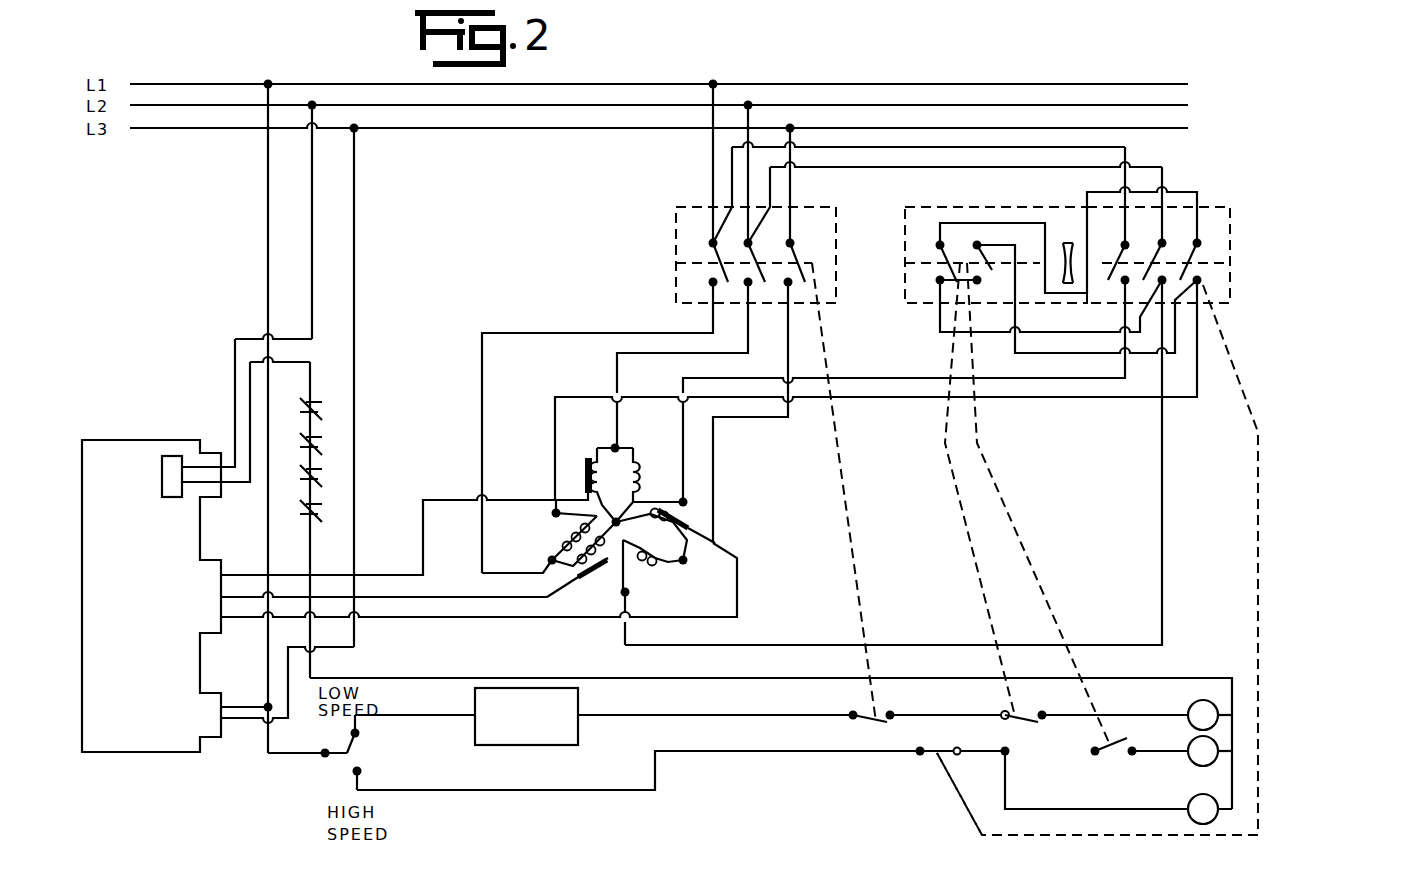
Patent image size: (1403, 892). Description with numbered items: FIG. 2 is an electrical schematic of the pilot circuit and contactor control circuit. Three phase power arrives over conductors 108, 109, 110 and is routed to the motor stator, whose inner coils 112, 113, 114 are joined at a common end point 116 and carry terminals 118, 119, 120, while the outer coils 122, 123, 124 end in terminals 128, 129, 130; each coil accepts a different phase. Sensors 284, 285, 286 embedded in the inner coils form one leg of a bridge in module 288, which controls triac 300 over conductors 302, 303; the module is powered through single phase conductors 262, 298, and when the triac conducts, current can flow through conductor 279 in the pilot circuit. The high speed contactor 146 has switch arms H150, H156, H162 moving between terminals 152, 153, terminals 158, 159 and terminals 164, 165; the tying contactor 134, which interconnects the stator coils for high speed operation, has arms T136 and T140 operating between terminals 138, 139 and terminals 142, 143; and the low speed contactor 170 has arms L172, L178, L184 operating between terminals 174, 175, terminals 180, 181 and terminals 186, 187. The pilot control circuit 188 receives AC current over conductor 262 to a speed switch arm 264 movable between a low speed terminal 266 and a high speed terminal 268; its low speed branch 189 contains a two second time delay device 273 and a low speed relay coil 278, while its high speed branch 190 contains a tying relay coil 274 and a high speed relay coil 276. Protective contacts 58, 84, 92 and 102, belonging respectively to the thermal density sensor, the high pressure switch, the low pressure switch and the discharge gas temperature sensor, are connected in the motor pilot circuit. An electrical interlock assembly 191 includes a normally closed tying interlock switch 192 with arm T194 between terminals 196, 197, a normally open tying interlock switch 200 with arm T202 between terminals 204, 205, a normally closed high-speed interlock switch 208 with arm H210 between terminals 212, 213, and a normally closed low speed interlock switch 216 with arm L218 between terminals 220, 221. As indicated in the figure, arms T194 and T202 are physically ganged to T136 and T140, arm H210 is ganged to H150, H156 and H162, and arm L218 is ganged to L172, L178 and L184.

The power conductor 108 is at (326, 84).
The power conductor 109 is at (383, 105).
The power conductor 110 is at (438, 128).
The conductor 262 is at (268, 266).
The conductor 279 is at (312, 226).
The single phase power conductor 298 is at (354, 208).
The conductor 302 is at (290, 339).
The conductor 303 is at (292, 362).
The triac 300 is at (165, 497).
The module 288 is at (162, 420).
The switch contacts 102 is at (302, 412).
The switch contacts 92 is at (302, 447).
The switch contacts 84 is at (302, 479).
The switch contacts 58 is at (302, 514).
The speed switch arm 264 is at (345, 755).
The low speed terminal 266 is at (362, 734).
The high speed terminal 268 is at (352, 773).
The low speed branch 189 is at (428, 690).
The time delay device 273 is at (512, 745).
The high speed branch 190 is at (505, 798).
The pilot control circuit 188 is at (614, 800).
The high speed contactor 146 is at (666, 262).
The terminal 152 is at (709, 238).
The switch arm H150 is at (722, 270).
The terminal 153 is at (708, 285).
The terminal 158 is at (738, 237).
The terminal 159 is at (748, 287).
The switch arm H156 is at (768, 285).
The terminal 164 is at (795, 240).
The switch arm H162 is at (795, 247).
The terminal 165 is at (790, 288).
The tying contactor 134 is at (928, 314).
The switch arm T136 is at (930, 272).
The terminal 138 is at (936, 243).
The terminal 142 is at (975, 243).
The switch arm T140 is at (993, 270).
The terminal 139 is at (935, 283).
The terminal 143 is at (978, 285).
The low speed contactor 170 is at (1244, 222).
The switch arm L172 is at (1120, 258).
The terminal 174 is at (1138, 240).
The switch arm L178 is at (1158, 244).
The terminal 180 is at (1168, 240).
The switch arm L184 is at (1203, 250).
The terminal 186 is at (1205, 240).
The terminal 175 is at (1123, 282).
The terminal 181 is at (1164, 285).
The terminal 187 is at (1203, 284).
The high-speed interlock switch 208 is at (846, 667).
The electrical interlock assembly 191 is at (940, 636).
The tying interlock switch 192 is at (1047, 636).
The tying interlock switch 200 is at (1080, 846).
The terminal 212 is at (850, 720).
The terminal 213 is at (893, 713).
The switch arm H210 is at (870, 720).
The terminal 196 is at (1006, 720).
The terminal 197 is at (1045, 718).
The switch arm T194 is at (1052, 704).
The terminal 220 is at (915, 755).
The terminal 221 is at (965, 737).
The low speed interlock switch 216 is at (912, 768).
The switch arm L218 is at (934, 755).
The terminal 204 is at (1092, 755).
The terminal 205 is at (1160, 740).
The switch arm T202 is at (1100, 762).
The low speed relay coil 278 is at (1193, 706).
The high speed relay coil 276 is at (1192, 762).
The tying relay coil 274 is at (1192, 820).
The terminal 118 is at (618, 445).
The inner coil 112 is at (634, 456).
The outer coil 122 is at (639, 478).
The terminal 128 is at (680, 501).
The common end point 116 is at (616, 520).
The sensor 284 is at (582, 472).
The terminal 130 is at (552, 515).
The outer coil 124 is at (575, 530).
The terminal 120 is at (548, 560).
The inner coil 114 is at (560, 568).
The sensor 286 is at (578, 578).
The terminal 129 is at (620, 592).
The inner coil 113 is at (650, 522).
The terminal 119 is at (686, 565).
The outer coil 123 is at (648, 560).
The sensor 285 is at (695, 525).